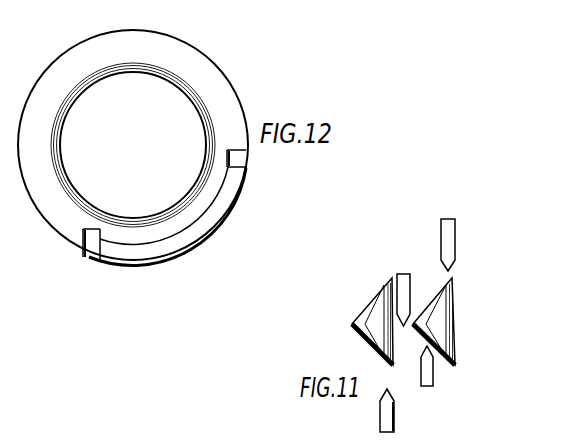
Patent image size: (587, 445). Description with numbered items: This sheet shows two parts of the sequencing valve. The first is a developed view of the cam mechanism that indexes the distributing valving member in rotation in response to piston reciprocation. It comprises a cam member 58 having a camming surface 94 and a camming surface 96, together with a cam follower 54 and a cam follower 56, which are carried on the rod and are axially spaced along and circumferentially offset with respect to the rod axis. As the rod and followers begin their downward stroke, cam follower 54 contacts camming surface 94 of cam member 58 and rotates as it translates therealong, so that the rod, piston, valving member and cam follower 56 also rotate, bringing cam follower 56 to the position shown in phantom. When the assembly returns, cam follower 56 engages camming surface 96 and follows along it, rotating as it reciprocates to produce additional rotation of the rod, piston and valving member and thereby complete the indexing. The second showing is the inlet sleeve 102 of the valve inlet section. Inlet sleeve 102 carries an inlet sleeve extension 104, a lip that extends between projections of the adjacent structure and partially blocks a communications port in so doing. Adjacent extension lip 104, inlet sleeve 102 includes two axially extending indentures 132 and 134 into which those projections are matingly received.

In FIG. 12, the inlet sleeve 102 is at (236, 95).
In FIG. 12, the inlet sleeve extension 104 is at (212, 228).
In FIG. 12, the indenture 132 is at (100, 249).
In FIG. 12, the indenture 134 is at (244, 158).
In FIG. 11, the cam follower 54 is at (448, 232).
In FIG. 11, the cam follower 56 is at (434, 373).
In FIG. 11, the cam member 58 is at (380, 313).
In FIG. 11, the camming surface 94 is at (441, 284).
In FIG. 11, the camming surface 96 is at (367, 333).